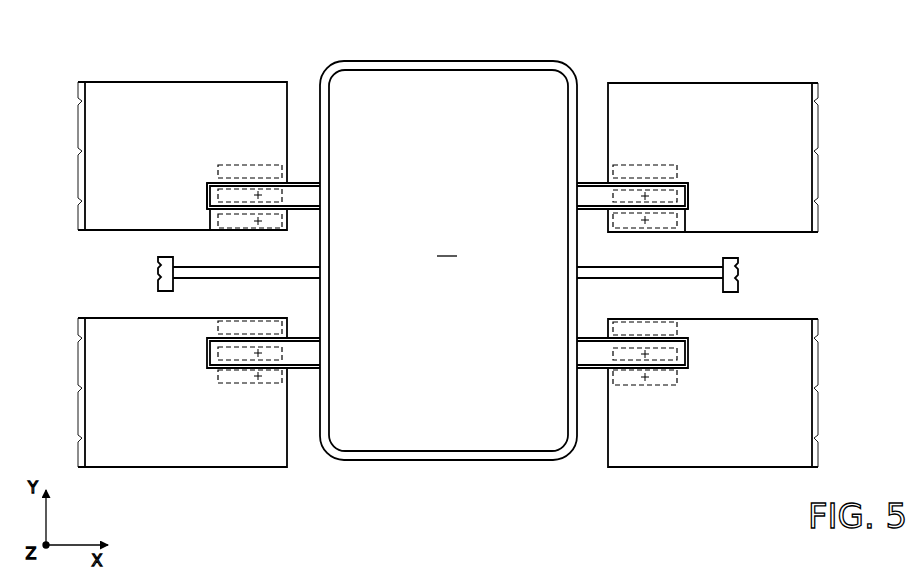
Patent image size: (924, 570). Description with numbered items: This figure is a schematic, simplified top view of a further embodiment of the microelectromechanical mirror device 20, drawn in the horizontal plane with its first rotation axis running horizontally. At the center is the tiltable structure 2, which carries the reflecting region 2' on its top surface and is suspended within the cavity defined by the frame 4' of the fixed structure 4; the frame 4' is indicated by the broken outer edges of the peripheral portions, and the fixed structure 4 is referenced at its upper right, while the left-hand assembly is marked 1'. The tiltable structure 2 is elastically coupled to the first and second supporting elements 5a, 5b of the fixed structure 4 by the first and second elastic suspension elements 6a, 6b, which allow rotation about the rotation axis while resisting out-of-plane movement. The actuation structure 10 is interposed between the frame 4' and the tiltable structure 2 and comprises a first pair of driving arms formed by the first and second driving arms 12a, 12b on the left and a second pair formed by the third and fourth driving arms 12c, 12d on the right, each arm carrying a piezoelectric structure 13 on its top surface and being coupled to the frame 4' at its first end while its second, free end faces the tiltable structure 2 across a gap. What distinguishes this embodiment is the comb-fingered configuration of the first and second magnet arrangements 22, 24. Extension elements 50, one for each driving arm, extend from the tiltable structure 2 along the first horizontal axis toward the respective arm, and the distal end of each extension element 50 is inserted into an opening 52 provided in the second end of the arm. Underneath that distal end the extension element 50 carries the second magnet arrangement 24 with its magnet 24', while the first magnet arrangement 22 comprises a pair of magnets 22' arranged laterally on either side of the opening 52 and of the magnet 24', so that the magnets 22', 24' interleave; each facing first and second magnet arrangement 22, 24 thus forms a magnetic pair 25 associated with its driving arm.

The first module assembly 1' is at (51, 143).
The actuation structure 10 is at (92, 79).
The first driving arm 12a is at (137, 82).
The second driving arm 12b is at (134, 467).
The third driving arm 12c is at (690, 84).
The fourth driving arm 12d is at (757, 319).
The piezoelectric structure 13 is at (137, 165).
The tiltable structure 2 is at (448, 234).
The reflecting region 2' is at (447, 245).
The microelectromechanical mirror device 20 is at (849, 78).
The fixed structure 4 is at (838, 54).
The frame 4' is at (835, 157).
The first magnet arrangement 22 is at (433, 97).
The magnet 22' is at (424, 274).
The second magnet arrangement 24 is at (423, 147).
The magnet 24' is at (465, 273).
The magnetic pair 25 is at (246, 235).
The extension element 50 is at (291, 193).
The opening 52 is at (217, 203).
The first supporting element 5a is at (158, 272).
The second supporting element 5b is at (742, 275).
The first elastic suspension element 6a is at (263, 278).
The second elastic suspension element 6b is at (661, 279).